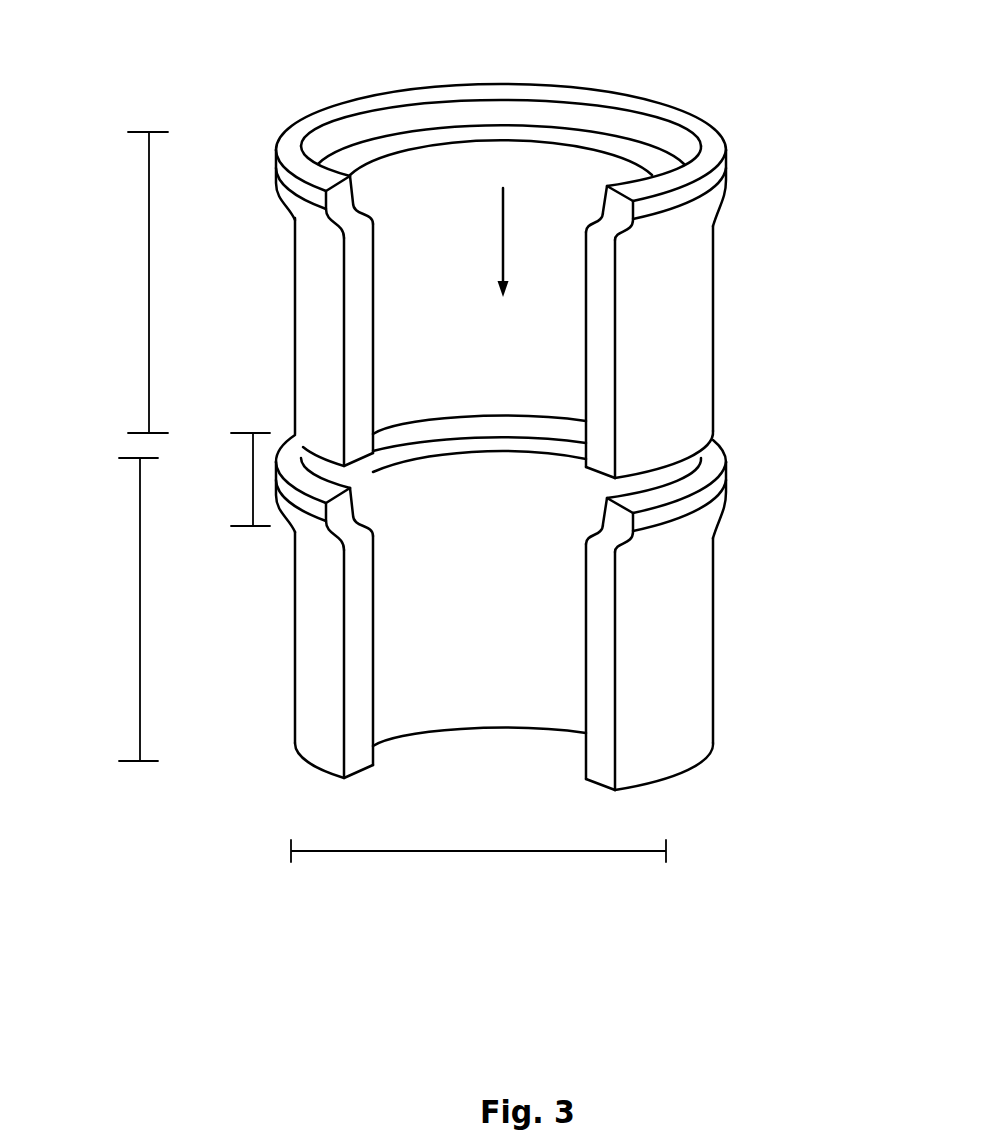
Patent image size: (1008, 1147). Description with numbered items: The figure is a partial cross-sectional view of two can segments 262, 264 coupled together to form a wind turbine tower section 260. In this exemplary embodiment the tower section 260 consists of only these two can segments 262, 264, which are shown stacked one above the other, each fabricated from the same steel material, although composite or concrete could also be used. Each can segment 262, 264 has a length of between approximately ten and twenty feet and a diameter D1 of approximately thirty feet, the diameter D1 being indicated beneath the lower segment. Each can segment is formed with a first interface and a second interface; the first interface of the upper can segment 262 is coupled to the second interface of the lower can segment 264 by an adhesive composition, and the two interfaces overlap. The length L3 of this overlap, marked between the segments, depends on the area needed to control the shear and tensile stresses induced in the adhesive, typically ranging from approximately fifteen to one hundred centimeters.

The wind tower section 260 is at (353, 45).
The can segment 262 is at (711, 299).
The can segment 264 is at (711, 611).
The length of the overlap L3 is at (253, 462).
The diameter D1 is at (563, 852).